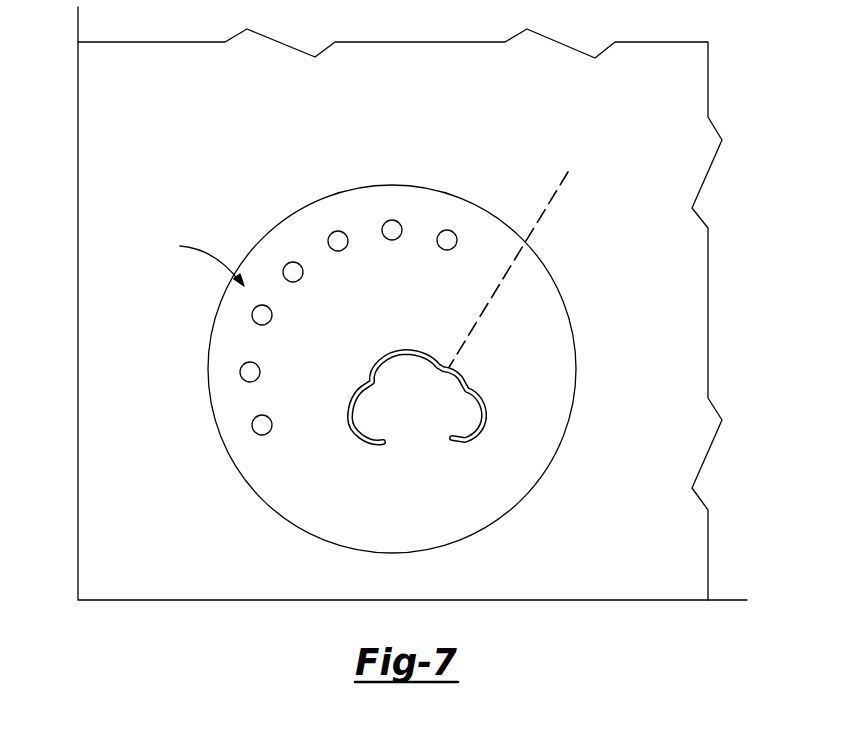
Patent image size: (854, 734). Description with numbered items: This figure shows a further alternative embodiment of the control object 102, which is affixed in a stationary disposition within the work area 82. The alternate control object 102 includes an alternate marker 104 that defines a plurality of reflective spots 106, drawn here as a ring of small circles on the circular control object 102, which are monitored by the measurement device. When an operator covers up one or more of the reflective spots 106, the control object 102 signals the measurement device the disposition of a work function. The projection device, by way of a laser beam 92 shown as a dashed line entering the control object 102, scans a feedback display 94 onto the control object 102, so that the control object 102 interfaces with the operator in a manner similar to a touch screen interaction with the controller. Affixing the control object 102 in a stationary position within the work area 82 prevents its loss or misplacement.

The work area 82 is at (192, 155).
The laser beam 92 is at (545, 212).
The feedback display 94 is at (394, 352).
The control object 102 is at (414, 521).
The marker 104 is at (196, 258).
The reflective spots 106 is at (333, 250).